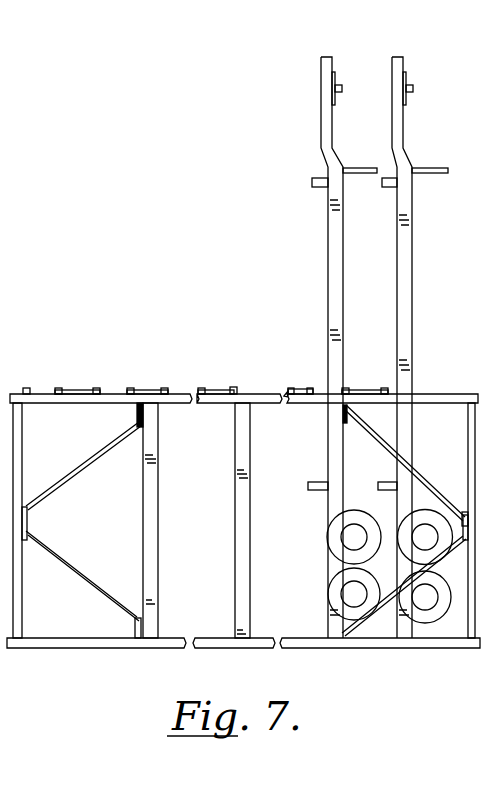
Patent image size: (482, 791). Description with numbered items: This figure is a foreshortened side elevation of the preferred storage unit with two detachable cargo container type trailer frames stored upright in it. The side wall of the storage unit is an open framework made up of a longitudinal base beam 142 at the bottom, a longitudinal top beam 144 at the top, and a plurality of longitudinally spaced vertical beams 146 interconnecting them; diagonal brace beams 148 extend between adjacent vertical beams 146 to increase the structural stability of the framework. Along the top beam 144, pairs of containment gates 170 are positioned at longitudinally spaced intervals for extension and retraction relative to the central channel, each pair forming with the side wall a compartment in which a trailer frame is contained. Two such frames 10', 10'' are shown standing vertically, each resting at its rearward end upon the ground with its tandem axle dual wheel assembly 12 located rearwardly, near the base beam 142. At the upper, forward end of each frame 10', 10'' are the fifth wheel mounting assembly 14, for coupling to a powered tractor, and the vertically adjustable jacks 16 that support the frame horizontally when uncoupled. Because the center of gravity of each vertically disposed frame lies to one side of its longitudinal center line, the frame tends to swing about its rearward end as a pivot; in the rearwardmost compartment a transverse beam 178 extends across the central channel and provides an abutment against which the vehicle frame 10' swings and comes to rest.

The frame 10' is at (428, 347).
The frame 10'' is at (303, 347).
The tandem axle dual wheel assembly 12 is at (444, 626).
The fifth wheel mounting assembly 14 is at (333, 104).
The jacks 16 is at (362, 167).
The longitudinal base beam 142 is at (303, 649).
The longitudinal top beam 144 is at (218, 406).
The vertical beams 146 is at (236, 505).
The diagonal brace beams 148 is at (55, 488).
The containment gates 170 is at (143, 382).
The transverse beam 178 is at (420, 401).